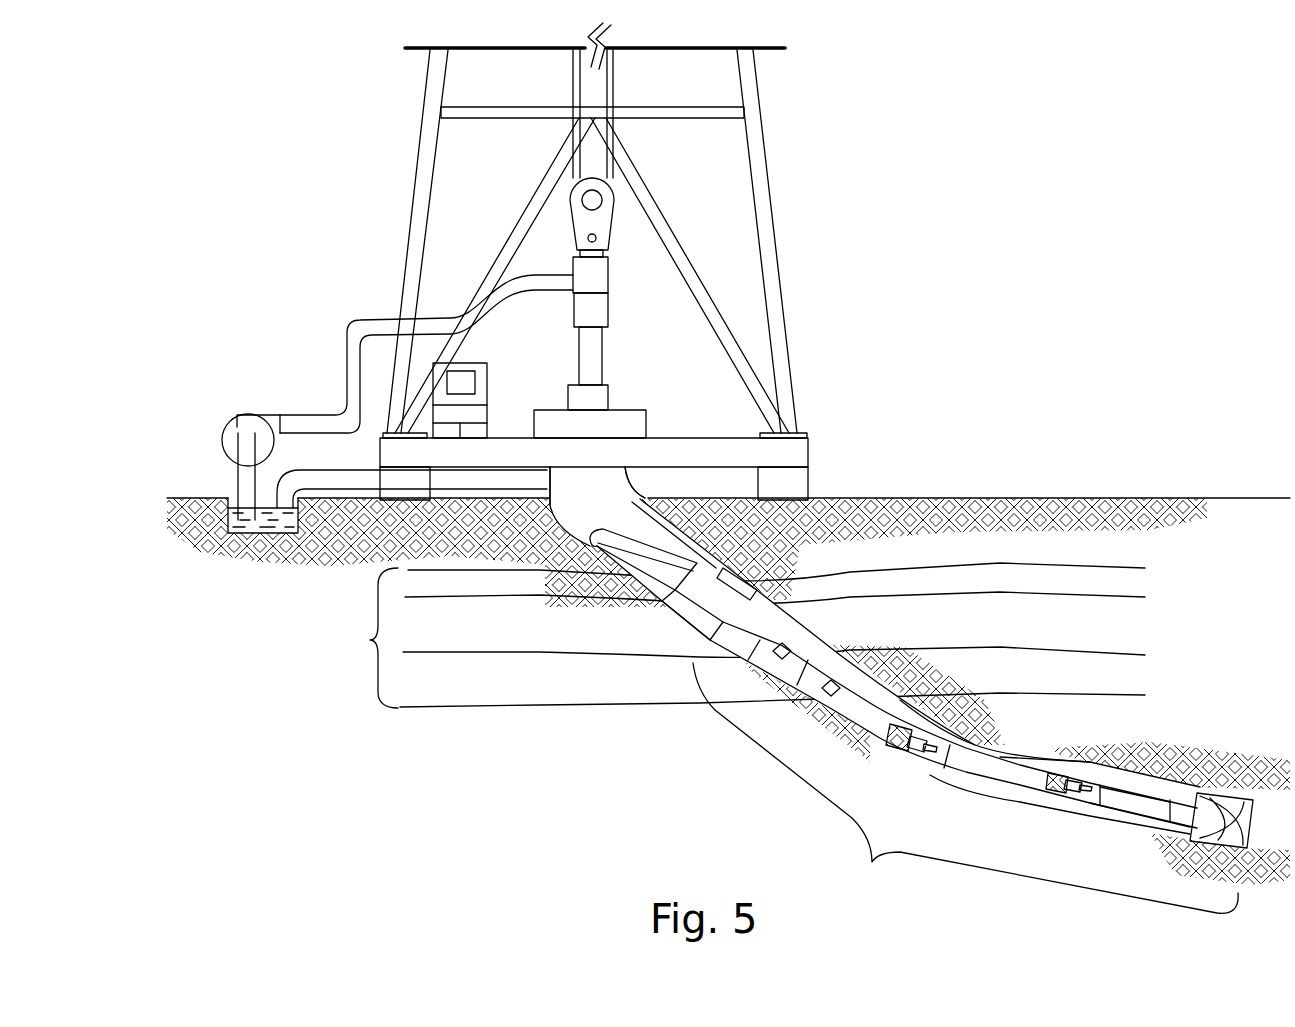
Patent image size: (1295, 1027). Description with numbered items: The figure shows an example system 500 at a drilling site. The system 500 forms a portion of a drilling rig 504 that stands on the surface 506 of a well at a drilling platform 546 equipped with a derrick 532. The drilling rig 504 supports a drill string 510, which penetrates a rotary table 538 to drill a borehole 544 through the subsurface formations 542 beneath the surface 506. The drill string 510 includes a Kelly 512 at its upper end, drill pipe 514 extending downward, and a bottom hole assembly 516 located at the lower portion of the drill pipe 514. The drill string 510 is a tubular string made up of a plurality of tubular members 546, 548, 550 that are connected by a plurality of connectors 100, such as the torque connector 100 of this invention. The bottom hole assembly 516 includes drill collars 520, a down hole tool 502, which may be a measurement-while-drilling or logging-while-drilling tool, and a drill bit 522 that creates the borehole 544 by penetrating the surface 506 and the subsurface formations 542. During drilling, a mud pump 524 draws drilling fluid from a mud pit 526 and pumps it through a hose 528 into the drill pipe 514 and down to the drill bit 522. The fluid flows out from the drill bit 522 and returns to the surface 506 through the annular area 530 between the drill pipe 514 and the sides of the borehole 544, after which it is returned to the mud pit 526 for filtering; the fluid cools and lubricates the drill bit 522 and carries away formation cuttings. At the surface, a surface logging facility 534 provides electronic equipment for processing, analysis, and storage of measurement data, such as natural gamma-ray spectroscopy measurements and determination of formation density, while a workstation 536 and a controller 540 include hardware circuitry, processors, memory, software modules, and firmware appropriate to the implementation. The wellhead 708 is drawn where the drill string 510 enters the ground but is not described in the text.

The torque connector 100 is at (910, 755).
The system 500 is at (298, 132).
The down hole tool 502 is at (838, 682).
The drilling rig 504 is at (637, 261).
The surface 506 is at (832, 498).
The drill string 510 is at (975, 753).
The Kelly 512 is at (602, 347).
The drill pipe 514 is at (732, 585).
The bottom hole assembly 516 is at (872, 862).
The drill collars 520 is at (678, 552).
The drill bit 522 is at (1215, 803).
The mud pump 524 is at (255, 415).
The mud pit 526 is at (248, 533).
The hose 528 is at (358, 320).
The annular area 530 is at (770, 617).
The derrick 532 is at (762, 138).
The surface logging facility 534 is at (476, 356).
The workstation 536 is at (488, 385).
The rotary table 538 is at (551, 409).
The controller 540 is at (475, 383).
The subsurface formations 542 is at (734, 635).
The borehole 544 is at (1002, 745).
The drilling platform / tubular member 546 is at (858, 710).
The tubular member 548 is at (987, 774).
The tubular member 550 is at (1133, 802).
The wellhead 708 is at (650, 497).